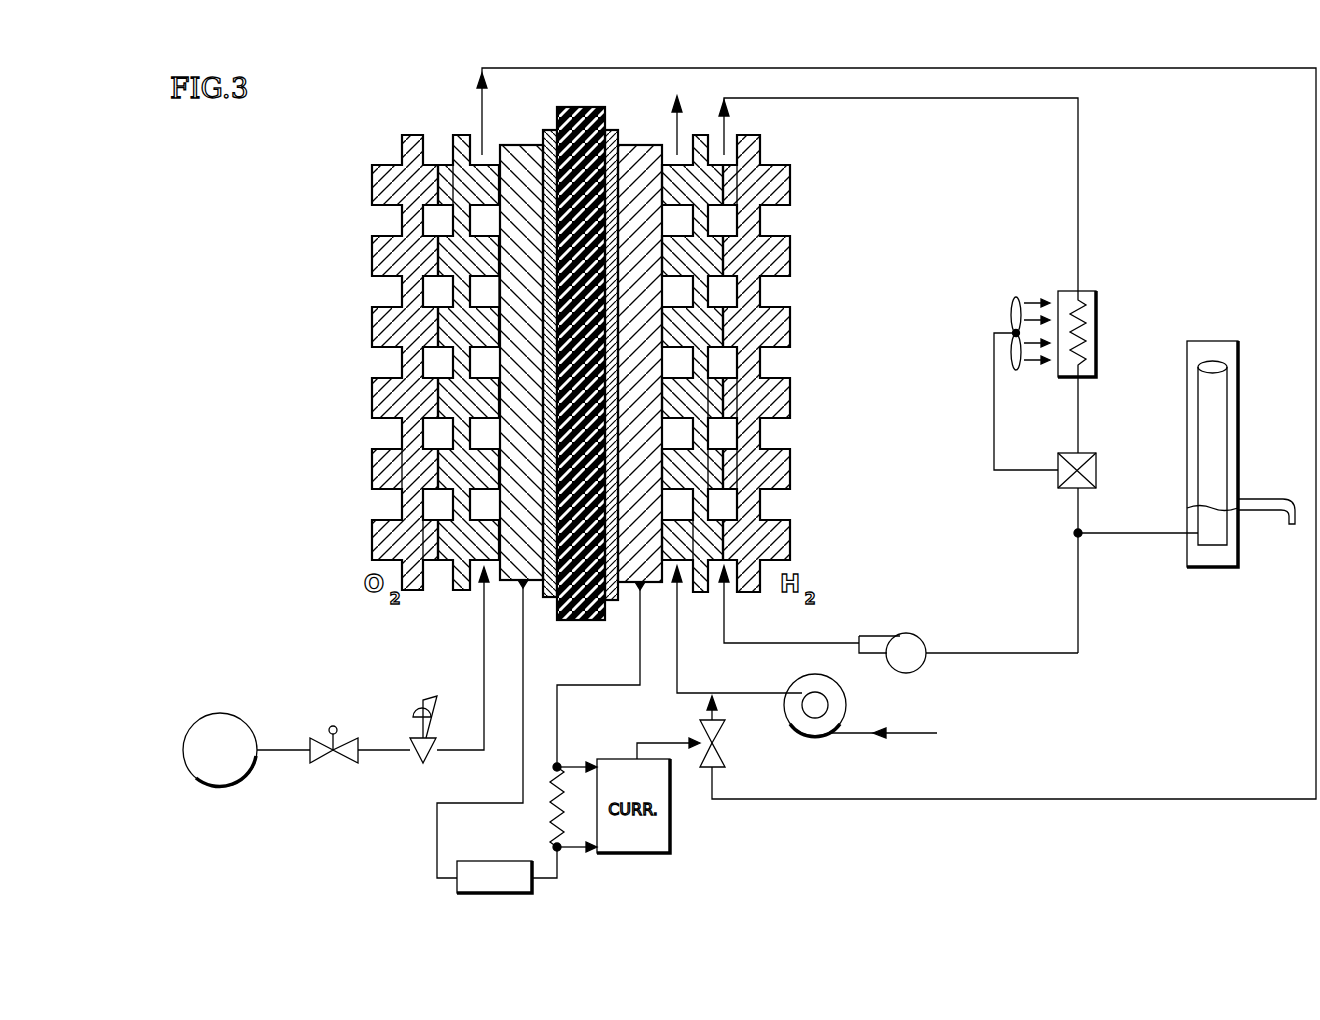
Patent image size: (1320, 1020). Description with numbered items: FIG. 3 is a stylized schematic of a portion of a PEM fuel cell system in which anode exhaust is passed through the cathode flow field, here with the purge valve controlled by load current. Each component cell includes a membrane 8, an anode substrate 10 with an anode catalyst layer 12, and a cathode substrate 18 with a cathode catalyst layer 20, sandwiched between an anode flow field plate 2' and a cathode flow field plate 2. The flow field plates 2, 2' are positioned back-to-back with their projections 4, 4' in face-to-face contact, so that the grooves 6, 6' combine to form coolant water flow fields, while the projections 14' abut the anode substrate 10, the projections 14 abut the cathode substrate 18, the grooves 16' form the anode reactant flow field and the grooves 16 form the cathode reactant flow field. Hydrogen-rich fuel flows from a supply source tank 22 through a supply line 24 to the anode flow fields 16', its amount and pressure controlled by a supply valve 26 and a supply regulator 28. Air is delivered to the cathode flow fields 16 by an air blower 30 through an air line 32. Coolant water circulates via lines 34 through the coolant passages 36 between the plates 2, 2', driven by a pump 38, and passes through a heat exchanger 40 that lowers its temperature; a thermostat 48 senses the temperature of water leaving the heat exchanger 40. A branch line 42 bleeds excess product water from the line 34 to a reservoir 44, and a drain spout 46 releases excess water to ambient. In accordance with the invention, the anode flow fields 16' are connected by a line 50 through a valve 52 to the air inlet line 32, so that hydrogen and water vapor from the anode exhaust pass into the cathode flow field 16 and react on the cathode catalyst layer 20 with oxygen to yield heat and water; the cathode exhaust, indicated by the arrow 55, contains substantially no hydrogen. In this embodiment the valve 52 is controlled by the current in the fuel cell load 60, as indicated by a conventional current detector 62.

The cathode flow field plate 2 is at (547, 370).
The anode flow field plate 2' is at (606, 362).
The projections 4 is at (580, 498).
The projections 4' is at (618, 170).
The grooves 6 is at (535, 428).
The grooves 6' is at (596, 397).
The membrane 8 is at (598, 107).
The anode substrate 10 is at (512, 580).
The anode catalyst layer 12 is at (548, 600).
The projections 14 is at (509, 538).
The projections 14' is at (650, 190).
The grooves 16 is at (514, 472).
The grooves 16' is at (648, 327).
The cathode substrate 18 is at (640, 150).
The cathode catalyst layer 20 is at (611, 128).
The supply source tank 22 is at (223, 713).
The supply line 24 is at (455, 752).
The supply valve 26 is at (337, 727).
The supply regulator 28 is at (435, 697).
The air blower 30 is at (787, 720).
The air line 32 is at (700, 693).
The lines 34 is at (1080, 165).
The coolant passages 36 is at (433, 502).
The pump 38 is at (912, 665).
The heat exchanger 40 is at (1097, 333).
The branch line 42 is at (1110, 535).
The reservoir 44 is at (1215, 418).
The drain spout 46 is at (1255, 499).
The thermostat 48 is at (1097, 473).
The line 50 is at (858, 68).
The valve 52 is at (700, 741).
The arrow 55 is at (686, 115).
The fuel cell load 60 is at (488, 861).
The current detector 62 is at (569, 752).